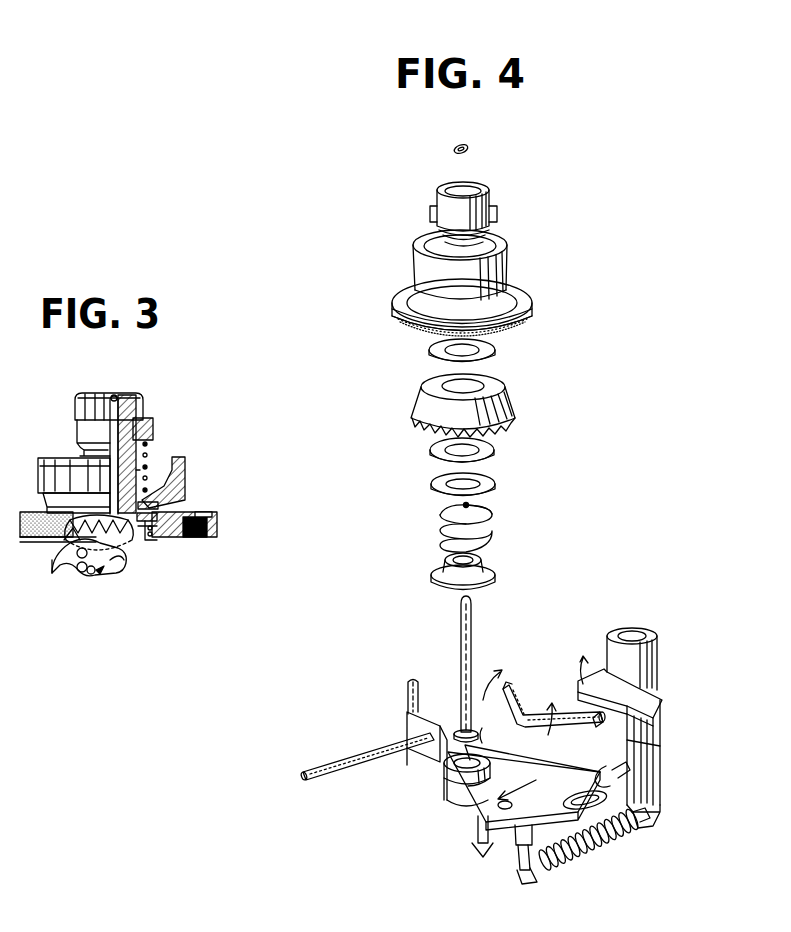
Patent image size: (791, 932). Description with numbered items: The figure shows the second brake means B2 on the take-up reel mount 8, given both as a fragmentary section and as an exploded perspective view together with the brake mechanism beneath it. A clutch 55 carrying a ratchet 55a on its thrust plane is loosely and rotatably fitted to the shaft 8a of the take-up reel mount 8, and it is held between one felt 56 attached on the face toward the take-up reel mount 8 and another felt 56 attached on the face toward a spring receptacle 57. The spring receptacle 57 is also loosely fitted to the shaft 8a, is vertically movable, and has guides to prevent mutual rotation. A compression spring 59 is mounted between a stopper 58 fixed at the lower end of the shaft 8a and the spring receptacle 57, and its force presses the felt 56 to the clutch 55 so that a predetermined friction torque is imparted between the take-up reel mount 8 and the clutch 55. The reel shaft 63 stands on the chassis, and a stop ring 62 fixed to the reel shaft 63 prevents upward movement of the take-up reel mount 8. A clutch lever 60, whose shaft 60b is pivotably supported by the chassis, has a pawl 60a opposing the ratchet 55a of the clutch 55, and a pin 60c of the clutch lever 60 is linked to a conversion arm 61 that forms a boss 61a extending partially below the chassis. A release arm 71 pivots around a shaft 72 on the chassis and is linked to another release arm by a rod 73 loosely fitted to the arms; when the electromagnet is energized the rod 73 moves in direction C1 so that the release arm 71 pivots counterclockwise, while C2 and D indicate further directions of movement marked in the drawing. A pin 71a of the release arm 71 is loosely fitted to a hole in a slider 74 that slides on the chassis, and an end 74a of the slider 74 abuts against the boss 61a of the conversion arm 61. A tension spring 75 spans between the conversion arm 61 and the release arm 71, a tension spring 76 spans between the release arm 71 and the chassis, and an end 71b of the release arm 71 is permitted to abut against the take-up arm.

In FIG. 3, the second brake means B2 is at (64, 416).
In FIG. 3, the take-up reel mount 8 is at (184, 466).
In FIG. 4, the take-up reel mount 8 is at (500, 256).
In FIG. 3, the shaft 8a is at (182, 496).
In FIG. 3, the clutch 55 is at (173, 542).
In FIG. 4, the clutch 55 is at (512, 393).
In FIG. 3, the ratchet 55a is at (70, 524).
In FIG. 4, the ratchet 55a is at (505, 430).
In FIG. 3, the felt 56 is at (148, 502).
In FIG. 4, the felt 56 is at (496, 351).
In FIG. 3, the spring receptacle 57 is at (148, 534).
In FIG. 4, the spring receptacle 57 is at (496, 485).
In FIG. 3, the stopper 58 is at (158, 540).
In FIG. 4, the stopper 58 is at (498, 576).
In FIG. 3, the compression spring 59 is at (153, 538).
In FIG. 4, the compression spring 59 is at (497, 530).
In FIG. 3, the clutch lever 60 is at (115, 573).
In FIG. 4, the clutch lever 60 is at (530, 718).
In FIG. 3, the pawl 60a is at (110, 577).
In FIG. 4, the pawl 60a is at (498, 692).
In FIG. 3, the shaft 60b is at (57, 567).
In FIG. 4, the shaft 60b is at (515, 724).
In FIG. 4, the pin 60c is at (592, 728).
In FIG. 4, the conversion arm 61 is at (648, 698).
In FIG. 4, the boss 61a is at (638, 746).
In FIG. 3, the stop ring 62 is at (124, 395).
In FIG. 4, the stop ring 62 is at (470, 149).
In FIG. 3, the reel shaft 63 is at (113, 396).
In FIG. 4, the reel shaft 63 is at (472, 619).
In FIG. 4, the release arm 71 is at (442, 778).
In FIG. 4, the pin 71a is at (512, 832).
In FIG. 4, the end 71b is at (407, 700).
In FIG. 4, the shaft 72 is at (465, 758).
In FIG. 4, the rod 73 is at (340, 772).
In FIG. 4, the slider 74 is at (565, 850).
In FIG. 4, the end 74a is at (628, 762).
In FIG. 4, the tension spring 75 is at (610, 830).
In FIG. 4, the tension spring 76 is at (484, 828).
In FIG. 4, the direction C1 is at (320, 749).
In FIG. 4, the direction C2 is at (356, 777).
In FIG. 4, the direction D is at (603, 767).